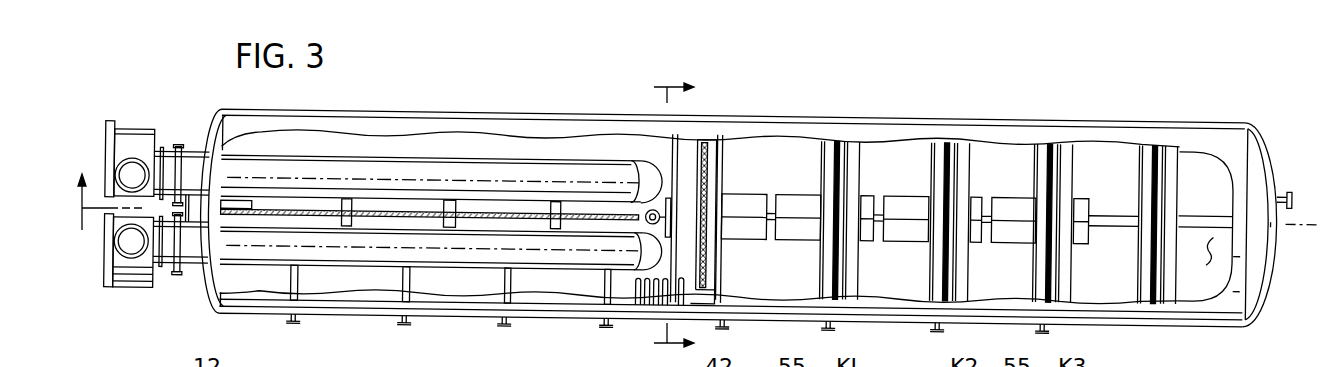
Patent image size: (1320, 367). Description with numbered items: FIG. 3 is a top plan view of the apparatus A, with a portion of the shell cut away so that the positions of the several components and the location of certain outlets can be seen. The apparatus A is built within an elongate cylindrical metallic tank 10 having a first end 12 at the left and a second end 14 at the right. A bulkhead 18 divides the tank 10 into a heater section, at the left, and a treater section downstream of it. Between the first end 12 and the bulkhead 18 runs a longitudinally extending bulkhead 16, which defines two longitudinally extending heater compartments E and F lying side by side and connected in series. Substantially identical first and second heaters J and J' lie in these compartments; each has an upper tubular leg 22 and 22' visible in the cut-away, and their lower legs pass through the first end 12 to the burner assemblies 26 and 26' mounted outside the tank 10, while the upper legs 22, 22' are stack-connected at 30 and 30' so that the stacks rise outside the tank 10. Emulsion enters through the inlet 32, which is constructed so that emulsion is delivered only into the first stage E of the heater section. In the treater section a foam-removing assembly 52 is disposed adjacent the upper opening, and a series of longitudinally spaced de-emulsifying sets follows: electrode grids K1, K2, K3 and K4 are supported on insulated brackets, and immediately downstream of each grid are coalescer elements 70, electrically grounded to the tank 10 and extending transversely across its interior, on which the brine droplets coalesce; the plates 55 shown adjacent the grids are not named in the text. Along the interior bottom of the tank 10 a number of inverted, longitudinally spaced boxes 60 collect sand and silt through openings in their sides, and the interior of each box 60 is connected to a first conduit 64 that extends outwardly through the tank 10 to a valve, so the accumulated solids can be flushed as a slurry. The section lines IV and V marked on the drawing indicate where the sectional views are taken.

The elongate cylindrical metallic tank 10 is at (838, 98).
The first end 12 is at (220, 110).
The second end 14 is at (1260, 143).
The longitudinally extending bulkhead 16 is at (539, 198).
The bulkhead 18 is at (674, 137).
The upper tubular leg 22 is at (442, 179).
The upper tubular leg 22' is at (441, 262).
The burner assembly 26 is at (157, 159).
The burner assembly 26' is at (156, 265).
The stack connection 30 is at (104, 164).
The stack connection 30' is at (104, 254).
The inlet 32 is at (649, 219).
The foam-removing assembly 52 is at (704, 140).
The separator plate 55 is at (823, 143).
The inverted box 60 is at (366, 206).
The first conduit 64 is at (402, 321).
The coalescer element 70 is at (856, 152).
The apparatus A is at (446, 100).
The heater compartment E is at (400, 146).
The heater compartment F is at (265, 280).
The first heater J is at (433, 159).
The second heater J' is at (432, 271).
The electrode grid K1 is at (840, 141).
The electrode grid K2 is at (937, 141).
The electrode grid K3 is at (1040, 141).
The electrode grid K4 is at (1158, 150).
The section line IV is at (109, 213).
The section line V is at (665, 217).